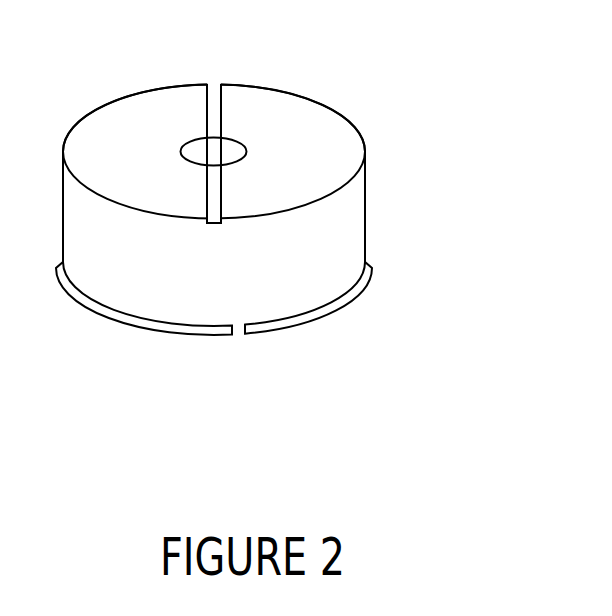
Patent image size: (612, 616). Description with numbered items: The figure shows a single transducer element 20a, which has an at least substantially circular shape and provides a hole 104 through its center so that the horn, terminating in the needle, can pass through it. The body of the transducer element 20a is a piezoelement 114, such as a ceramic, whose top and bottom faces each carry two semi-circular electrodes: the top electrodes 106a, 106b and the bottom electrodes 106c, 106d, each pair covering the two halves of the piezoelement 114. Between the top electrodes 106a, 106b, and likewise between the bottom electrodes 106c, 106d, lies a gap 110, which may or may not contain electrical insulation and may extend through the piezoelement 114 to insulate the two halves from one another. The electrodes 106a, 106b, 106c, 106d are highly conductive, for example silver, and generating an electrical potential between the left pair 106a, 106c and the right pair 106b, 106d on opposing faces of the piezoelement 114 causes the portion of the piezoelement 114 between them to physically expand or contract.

The transducer element 20a is at (416, 77).
The hole 104 is at (214, 150).
The top left electrode 106a is at (120, 130).
The top right electrode 106b is at (320, 130).
The bottom left electrode 106c is at (105, 315).
The bottom right electrode 106d is at (342, 303).
The gap 110 is at (213, 93).
The piezoelement 114 is at (366, 212).